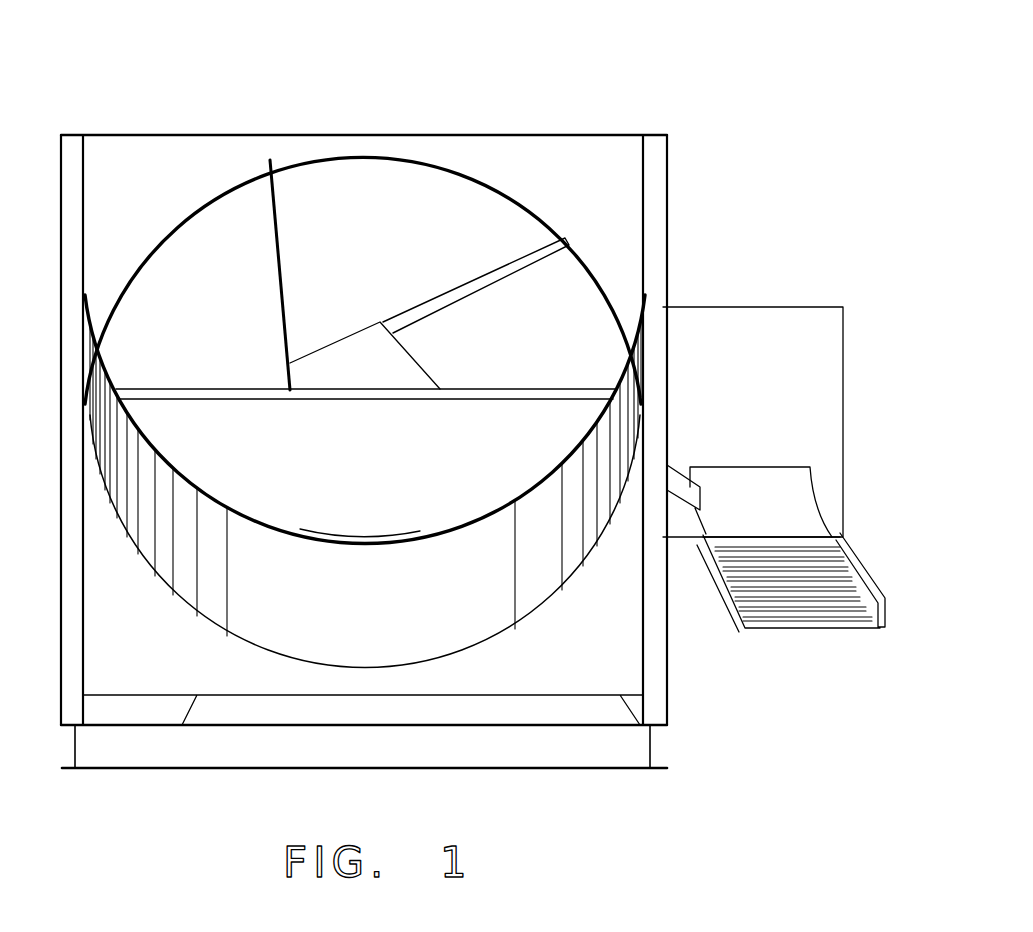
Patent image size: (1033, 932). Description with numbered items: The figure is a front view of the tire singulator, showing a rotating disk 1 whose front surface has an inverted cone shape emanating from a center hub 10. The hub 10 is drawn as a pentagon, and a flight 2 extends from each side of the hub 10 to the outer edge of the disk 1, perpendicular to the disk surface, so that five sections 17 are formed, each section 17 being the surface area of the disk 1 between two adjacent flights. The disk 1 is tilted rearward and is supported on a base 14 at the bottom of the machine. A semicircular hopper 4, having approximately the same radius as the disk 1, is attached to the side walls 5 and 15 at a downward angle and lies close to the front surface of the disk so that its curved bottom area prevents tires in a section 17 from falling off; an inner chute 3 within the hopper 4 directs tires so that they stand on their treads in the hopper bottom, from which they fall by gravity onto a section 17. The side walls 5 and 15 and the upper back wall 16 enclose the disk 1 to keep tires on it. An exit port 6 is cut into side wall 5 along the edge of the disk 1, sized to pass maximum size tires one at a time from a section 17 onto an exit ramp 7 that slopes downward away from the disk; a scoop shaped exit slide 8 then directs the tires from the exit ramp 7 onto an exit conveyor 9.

The disk 1 is at (357, 150).
The flight 2 is at (482, 275).
The inner chute 3 is at (240, 387).
The semi circular hopper 4 is at (580, 435).
The side wall 5 is at (667, 222).
The exit port 6 is at (666, 373).
The exit ramp 7 is at (673, 467).
The exit slide 8 is at (815, 490).
The exit conveyor 9 is at (873, 565).
The center hub 10 is at (320, 345).
The base 14 is at (652, 748).
The side wall 15 is at (72, 130).
The upper back wall 16 is at (607, 133).
The section 17 is at (394, 232).